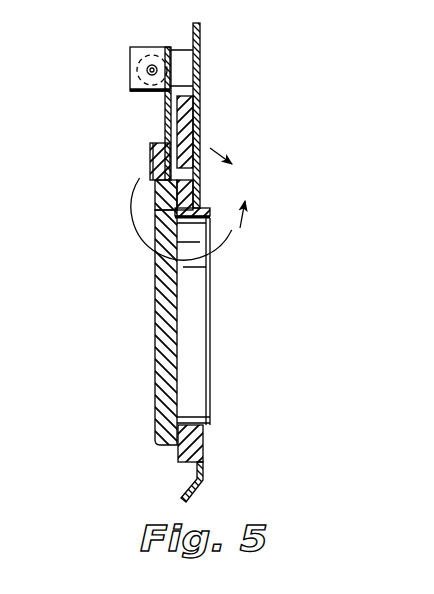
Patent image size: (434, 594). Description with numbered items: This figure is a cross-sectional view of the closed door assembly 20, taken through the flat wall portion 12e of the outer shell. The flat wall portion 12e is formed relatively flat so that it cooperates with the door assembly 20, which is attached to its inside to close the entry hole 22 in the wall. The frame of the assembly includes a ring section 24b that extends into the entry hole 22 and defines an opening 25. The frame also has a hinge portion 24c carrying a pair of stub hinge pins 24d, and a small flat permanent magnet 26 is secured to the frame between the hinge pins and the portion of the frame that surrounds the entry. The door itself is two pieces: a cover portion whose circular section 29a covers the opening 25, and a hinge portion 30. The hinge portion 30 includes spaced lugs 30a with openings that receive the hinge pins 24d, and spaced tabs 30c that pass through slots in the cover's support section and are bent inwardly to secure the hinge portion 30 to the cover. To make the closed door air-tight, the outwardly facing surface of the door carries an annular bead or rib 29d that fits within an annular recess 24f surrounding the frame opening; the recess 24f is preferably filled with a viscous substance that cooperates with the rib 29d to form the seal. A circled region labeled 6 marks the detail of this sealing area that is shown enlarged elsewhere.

The door assembly 20 is at (146, 356).
The flat wall portion 12e is at (200, 30).
The stub hinge pins 24d is at (146, 67).
The spaced lugs 30a is at (130, 84).
The hinge portion 30 is at (165, 108).
The hinge portion 24c is at (185, 66).
The permanent magnet 26 is at (196, 110).
The spaced tabs 30c is at (152, 158).
The annular recess 24f is at (157, 203).
The circular section 29a is at (158, 294).
The ring section 24b is at (208, 212).
The entry hole 22 is at (203, 428).
The opening 25 is at (200, 412).
The annular bead or rib 29d is at (205, 455).
The section view indicator 6 is at (193, 204).